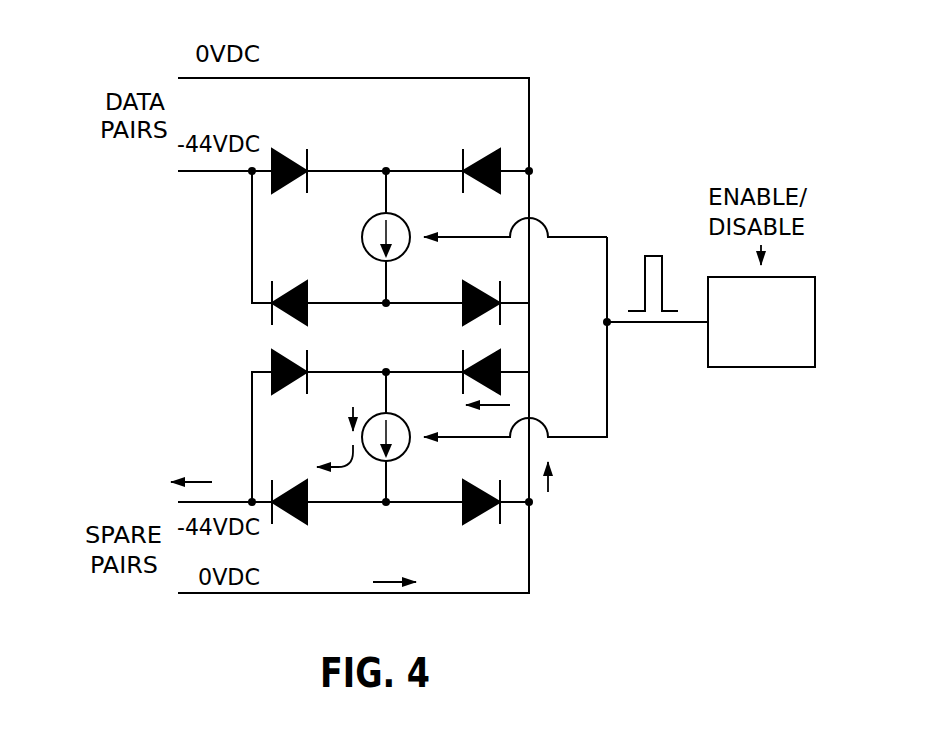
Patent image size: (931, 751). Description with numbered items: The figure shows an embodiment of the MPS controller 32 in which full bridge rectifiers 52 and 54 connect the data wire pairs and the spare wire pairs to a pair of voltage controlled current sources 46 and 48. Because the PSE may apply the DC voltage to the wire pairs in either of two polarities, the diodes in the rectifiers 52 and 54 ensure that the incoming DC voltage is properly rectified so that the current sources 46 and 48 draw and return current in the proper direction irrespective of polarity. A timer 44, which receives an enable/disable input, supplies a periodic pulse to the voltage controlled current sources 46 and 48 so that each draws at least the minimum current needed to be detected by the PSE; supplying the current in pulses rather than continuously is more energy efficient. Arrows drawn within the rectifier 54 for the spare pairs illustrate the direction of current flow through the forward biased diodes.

The MPS controller 32 is at (677, 156).
The timer 44 is at (747, 367).
The voltage controlled current source 46 is at (362, 240).
The voltage controlled current source 48 is at (373, 417).
The full bridge rectifier 52 is at (200, 256).
The full bridge rectifier 54 is at (200, 445).